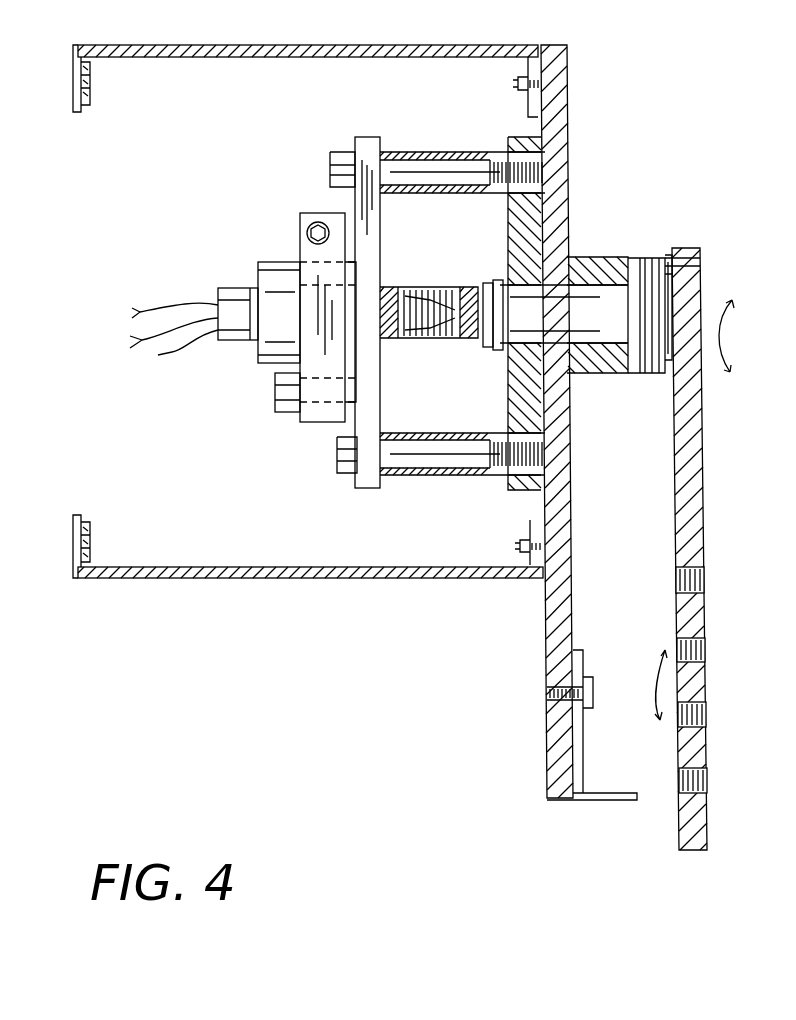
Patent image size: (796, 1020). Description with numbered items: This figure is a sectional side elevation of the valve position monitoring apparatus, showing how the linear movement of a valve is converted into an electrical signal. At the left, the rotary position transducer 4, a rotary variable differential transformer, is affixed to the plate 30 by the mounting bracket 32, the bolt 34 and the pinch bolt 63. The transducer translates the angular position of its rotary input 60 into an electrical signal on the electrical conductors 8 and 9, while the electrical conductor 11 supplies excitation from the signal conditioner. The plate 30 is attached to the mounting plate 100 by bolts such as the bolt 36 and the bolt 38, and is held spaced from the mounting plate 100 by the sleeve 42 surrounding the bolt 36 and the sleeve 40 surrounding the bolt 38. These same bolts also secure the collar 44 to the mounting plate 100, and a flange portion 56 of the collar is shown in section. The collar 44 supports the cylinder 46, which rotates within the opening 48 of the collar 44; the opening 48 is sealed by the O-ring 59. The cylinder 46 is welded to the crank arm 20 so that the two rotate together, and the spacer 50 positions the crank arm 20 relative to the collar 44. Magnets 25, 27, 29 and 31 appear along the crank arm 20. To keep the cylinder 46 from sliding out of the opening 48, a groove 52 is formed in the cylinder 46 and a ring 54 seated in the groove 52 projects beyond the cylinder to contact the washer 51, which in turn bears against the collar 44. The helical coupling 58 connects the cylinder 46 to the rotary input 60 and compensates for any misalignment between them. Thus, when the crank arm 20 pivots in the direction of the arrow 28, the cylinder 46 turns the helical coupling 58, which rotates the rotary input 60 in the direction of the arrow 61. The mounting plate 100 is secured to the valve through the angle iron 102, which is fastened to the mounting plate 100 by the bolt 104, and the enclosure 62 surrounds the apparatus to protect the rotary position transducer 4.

The rotary position transducer 4 is at (272, 268).
The electrical conductor 8 is at (158, 306).
The electrical conductor 9 is at (148, 345).
The electrical conductor 11 is at (172, 352).
The crank arm 20 is at (677, 560).
The magnet 25 is at (710, 781).
The magnet 27 is at (708, 716).
The arrow 28 is at (730, 372).
The magnet 29 is at (707, 652).
The plate 30 is at (362, 137).
The magnet 31 is at (706, 578).
The mounting bracket 32 is at (318, 213).
The bolt 34 is at (285, 412).
The bolt 36 is at (432, 165).
The bolt 38 is at (440, 475).
The sleeve 40 is at (420, 433).
The sleeve 42 is at (468, 152).
The collar 44 is at (580, 257).
The cylinder 46 is at (600, 292).
The opening 48 is at (592, 352).
The spacer 50 is at (660, 378).
The washer 51 is at (498, 380).
The groove 52 is at (489, 285).
The ring 54 is at (499, 282).
The hub flange 56 is at (510, 216).
The helical coupling 58 is at (417, 338).
The O-ring 59 is at (668, 262).
The rotary input 60 is at (398, 290).
The arrow 61 is at (455, 270).
The enclosure 62 is at (123, 57).
The pinch bolt 63 is at (308, 233).
The mounting plate 100 is at (567, 122).
The angle iron 102 is at (600, 800).
The bolt 104 is at (547, 693).